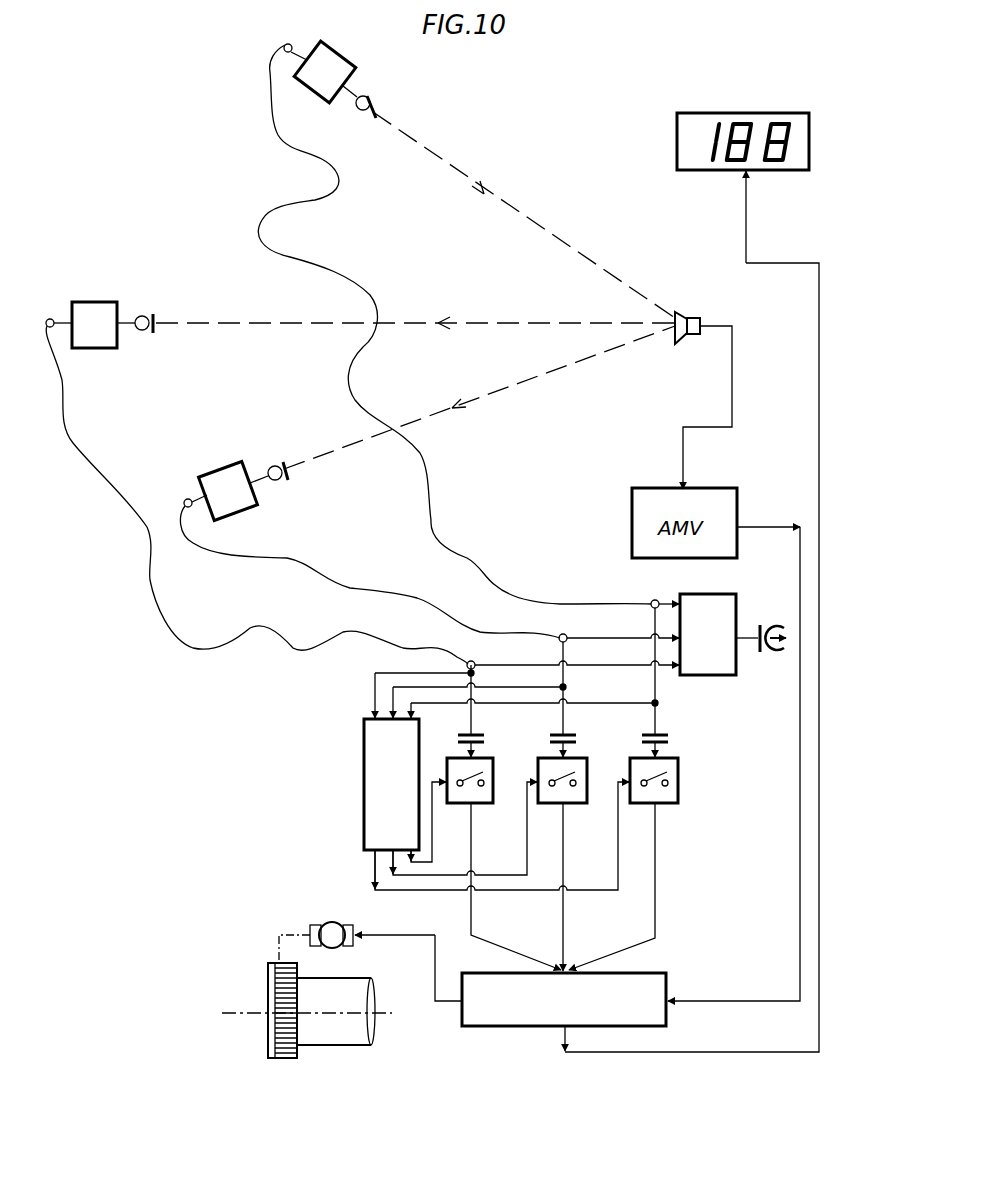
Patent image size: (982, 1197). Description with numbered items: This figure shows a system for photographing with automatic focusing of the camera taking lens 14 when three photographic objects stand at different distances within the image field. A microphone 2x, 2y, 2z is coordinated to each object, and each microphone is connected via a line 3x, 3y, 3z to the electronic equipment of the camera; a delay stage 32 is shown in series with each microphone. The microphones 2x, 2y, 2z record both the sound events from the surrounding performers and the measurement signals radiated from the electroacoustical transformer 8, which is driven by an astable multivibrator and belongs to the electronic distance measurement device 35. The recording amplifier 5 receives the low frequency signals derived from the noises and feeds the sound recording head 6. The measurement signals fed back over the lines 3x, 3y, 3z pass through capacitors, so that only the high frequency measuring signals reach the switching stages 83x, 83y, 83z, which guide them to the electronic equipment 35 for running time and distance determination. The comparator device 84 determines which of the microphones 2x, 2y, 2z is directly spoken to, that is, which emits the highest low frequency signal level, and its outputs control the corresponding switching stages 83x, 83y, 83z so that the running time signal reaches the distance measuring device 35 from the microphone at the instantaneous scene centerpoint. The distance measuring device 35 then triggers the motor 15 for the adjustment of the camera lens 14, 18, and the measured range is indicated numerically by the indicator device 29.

The delay stage 32 is at (330, 62).
The microphone 2x is at (377, 90).
The microphone 2y is at (144, 316).
The microphone 2z is at (274, 466).
The line 3x is at (273, 214).
The line 3y is at (100, 482).
The line 3z is at (291, 561).
The electroacoustical transformer 8 is at (694, 318).
The indicator device 29 is at (679, 140).
The recording amplifier 5 is at (738, 605).
The sound recording head 6 is at (780, 627).
The comparator device 84 is at (364, 743).
The switching stage 83y is at (482, 764).
The switching stage 83z is at (574, 765).
The switching stage 83x is at (668, 765).
The electronic distance measurement device 35 is at (656, 980).
The motor 15 is at (329, 922).
The camera lens adjustment member 18 is at (270, 978).
The camera taking lens 14 is at (306, 1054).